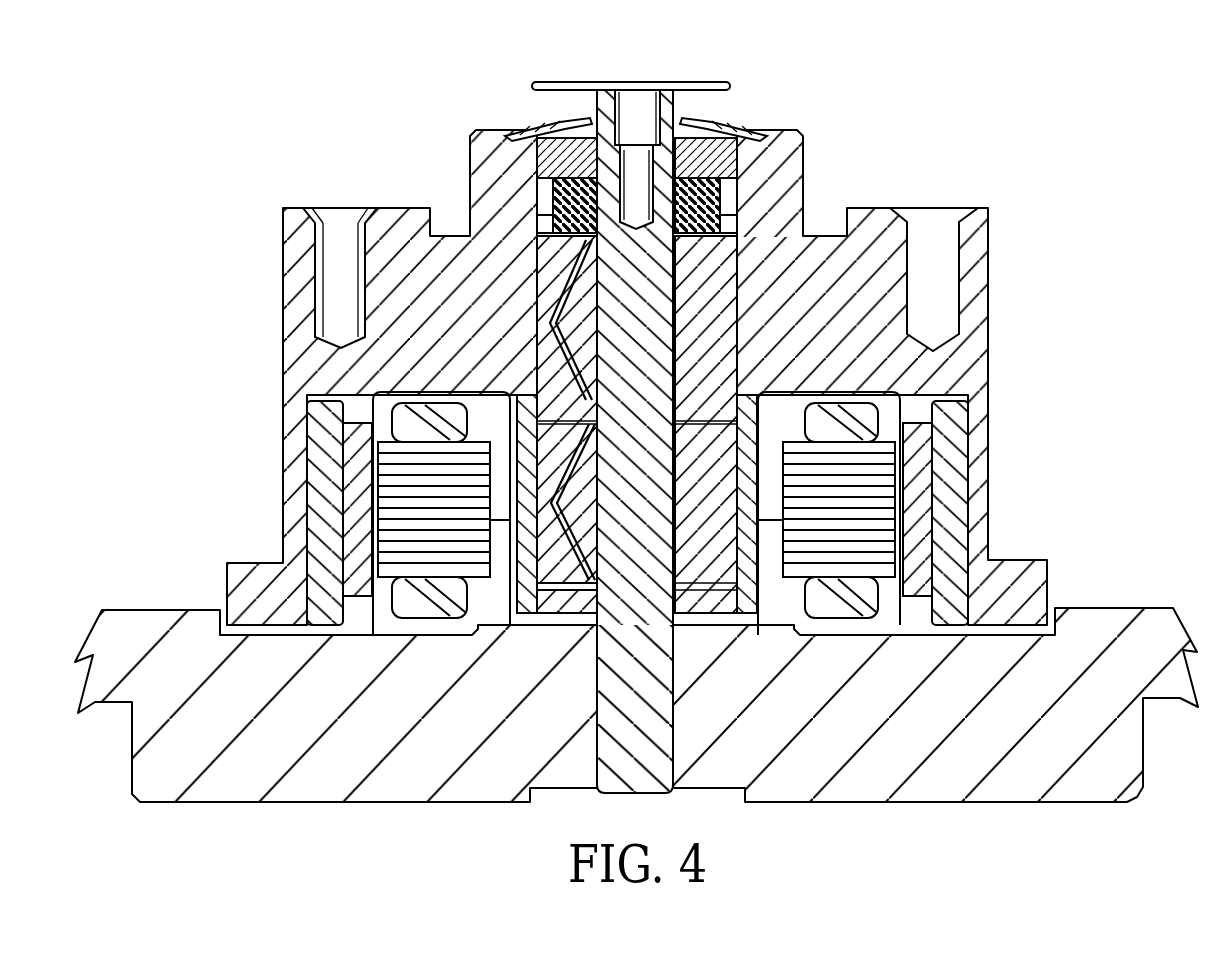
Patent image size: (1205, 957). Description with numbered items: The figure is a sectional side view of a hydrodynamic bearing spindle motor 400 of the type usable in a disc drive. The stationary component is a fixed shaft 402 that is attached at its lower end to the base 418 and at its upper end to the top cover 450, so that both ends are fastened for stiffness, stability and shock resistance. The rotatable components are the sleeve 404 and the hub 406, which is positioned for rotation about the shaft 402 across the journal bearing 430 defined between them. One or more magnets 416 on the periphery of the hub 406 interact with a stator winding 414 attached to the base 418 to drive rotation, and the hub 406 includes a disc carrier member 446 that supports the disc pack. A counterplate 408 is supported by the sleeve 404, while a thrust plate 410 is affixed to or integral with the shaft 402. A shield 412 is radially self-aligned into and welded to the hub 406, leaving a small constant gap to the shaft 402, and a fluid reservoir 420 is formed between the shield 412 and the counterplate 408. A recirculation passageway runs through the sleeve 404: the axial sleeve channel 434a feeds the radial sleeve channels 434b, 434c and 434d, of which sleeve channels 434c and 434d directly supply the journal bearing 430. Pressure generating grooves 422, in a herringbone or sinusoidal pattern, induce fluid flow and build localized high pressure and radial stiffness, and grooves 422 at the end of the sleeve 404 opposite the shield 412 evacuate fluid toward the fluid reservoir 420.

The hydrodynamic bearing spindle motor 400 is at (376, 89).
The shaft 402 is at (655, 500).
The sleeve 404 is at (587, 417).
The hub 406 is at (474, 333).
The counterplate 408 is at (740, 133).
The thrust plate 410 is at (718, 184).
The shield 412 is at (712, 120).
The stator winding 414 is at (445, 508).
The magnet 416 is at (912, 488).
The base 418 is at (893, 718).
The fluid reservoir 420 is at (553, 122).
The pressure generating grooves 422 is at (597, 287).
The journal bearing 430 is at (690, 295).
The sleeve channel 434a is at (533, 330).
The sleeve channel 434b is at (547, 203).
The sleeve channel 434c is at (547, 408).
The sleeve channel 434d is at (548, 590).
The disc carrier member 446 is at (970, 388).
The top cover 450 is at (688, 82).